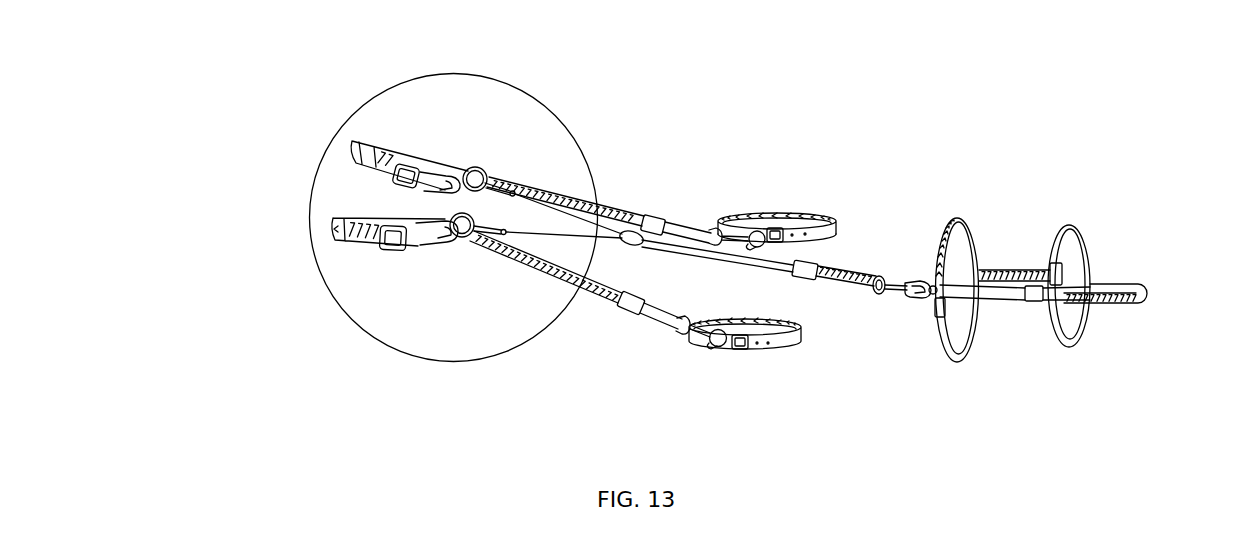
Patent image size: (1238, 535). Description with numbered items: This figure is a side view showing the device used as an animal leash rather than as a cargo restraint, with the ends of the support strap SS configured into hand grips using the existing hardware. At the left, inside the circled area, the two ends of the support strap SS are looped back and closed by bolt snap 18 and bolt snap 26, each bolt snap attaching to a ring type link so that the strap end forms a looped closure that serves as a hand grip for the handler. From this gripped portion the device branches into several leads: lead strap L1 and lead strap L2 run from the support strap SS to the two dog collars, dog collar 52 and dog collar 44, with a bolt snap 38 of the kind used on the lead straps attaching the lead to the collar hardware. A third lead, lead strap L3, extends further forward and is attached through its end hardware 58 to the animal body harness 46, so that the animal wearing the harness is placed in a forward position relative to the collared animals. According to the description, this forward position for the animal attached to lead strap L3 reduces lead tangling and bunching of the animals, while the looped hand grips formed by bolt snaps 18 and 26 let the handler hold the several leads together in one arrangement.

The bolt snap 18 is at (433, 245).
The bolt snap 26 is at (447, 183).
The support strap SS is at (335, 225).
The lead strap L1 is at (650, 313).
The lead strap L2 is at (652, 217).
The lead strap L3 is at (857, 282).
The bolt snap 38 is at (790, 246).
The dog collar 44 is at (775, 214).
The dog collar 52 is at (760, 344).
The snap clip 58 is at (902, 277).
The animal body harness 46 is at (1123, 285).